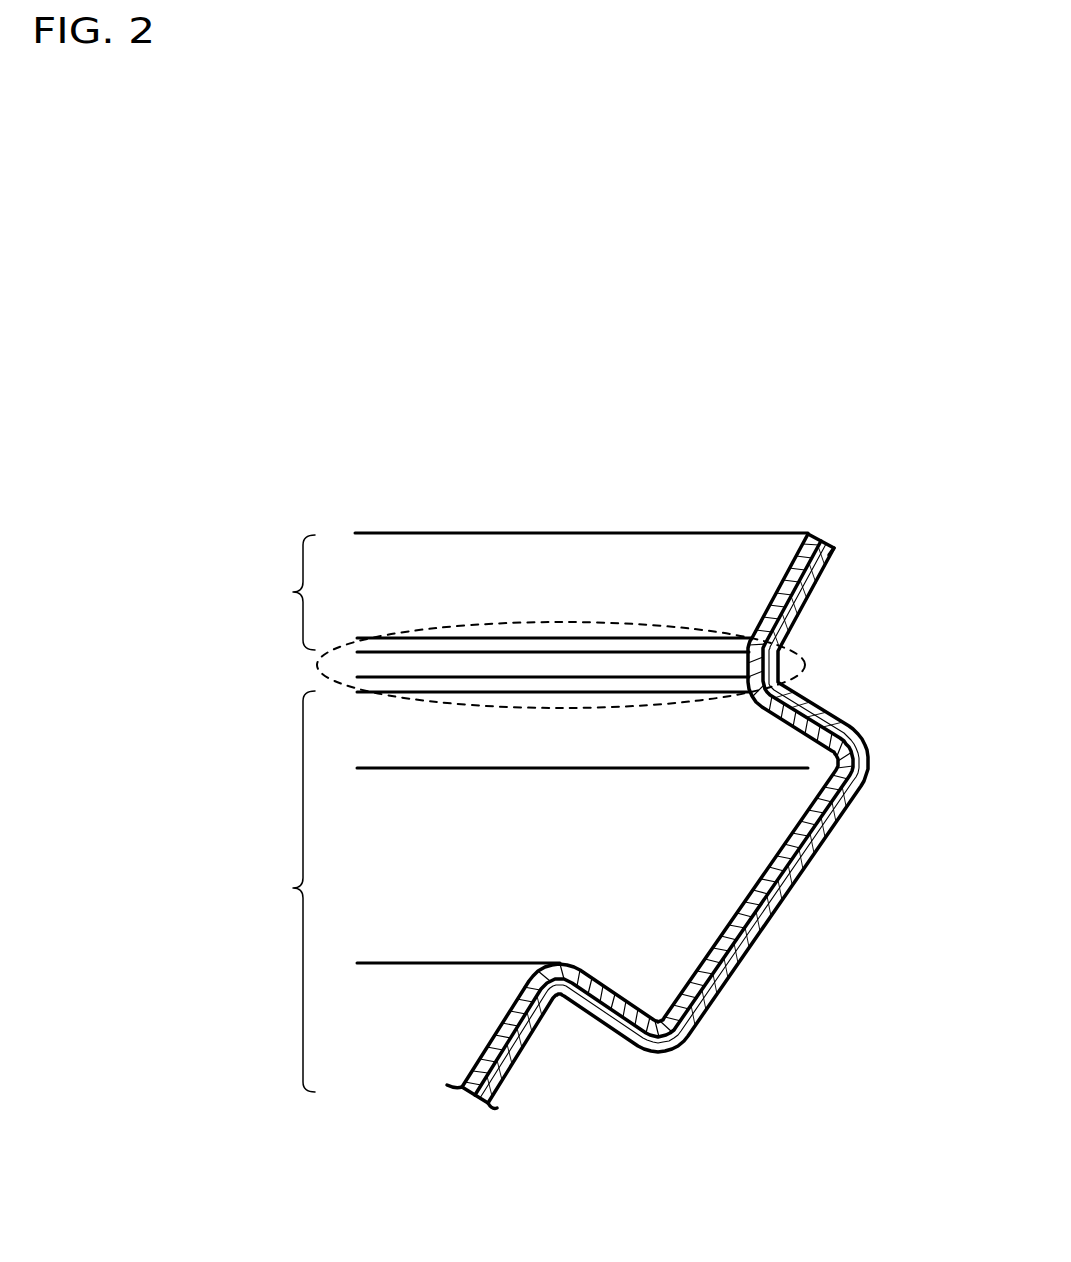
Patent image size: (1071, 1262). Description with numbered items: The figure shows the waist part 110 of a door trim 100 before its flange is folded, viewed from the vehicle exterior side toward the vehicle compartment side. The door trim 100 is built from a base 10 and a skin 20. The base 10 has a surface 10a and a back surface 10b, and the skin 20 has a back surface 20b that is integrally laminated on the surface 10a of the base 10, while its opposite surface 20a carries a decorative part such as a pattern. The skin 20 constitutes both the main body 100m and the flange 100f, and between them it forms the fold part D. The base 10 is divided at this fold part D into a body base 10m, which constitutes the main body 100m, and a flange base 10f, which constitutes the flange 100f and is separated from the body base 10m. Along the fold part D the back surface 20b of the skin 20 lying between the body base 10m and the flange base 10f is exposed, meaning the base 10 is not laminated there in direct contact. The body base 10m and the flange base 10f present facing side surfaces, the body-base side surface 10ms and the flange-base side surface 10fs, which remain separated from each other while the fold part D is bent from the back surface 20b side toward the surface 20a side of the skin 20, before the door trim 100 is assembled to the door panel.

The waist part 110 is at (536, 440).
The door trim 100 is at (912, 400).
The base 10 is at (790, 535).
The skin 20 is at (856, 560).
The flange base 10f is at (645, 530).
The flange 100f is at (260, 592).
The main body 100m is at (250, 891).
The body base 10m is at (458, 868).
The body-base side surface 10ms is at (410, 687).
The flange-base side surface 10fs is at (522, 647).
The back surface of the skin 20b is at (636, 663).
The back surface of the base 10b is at (753, 888).
The surface of the base 10a is at (805, 868).
The surface of the skin 20a is at (760, 950).
The fold part D is at (800, 660).